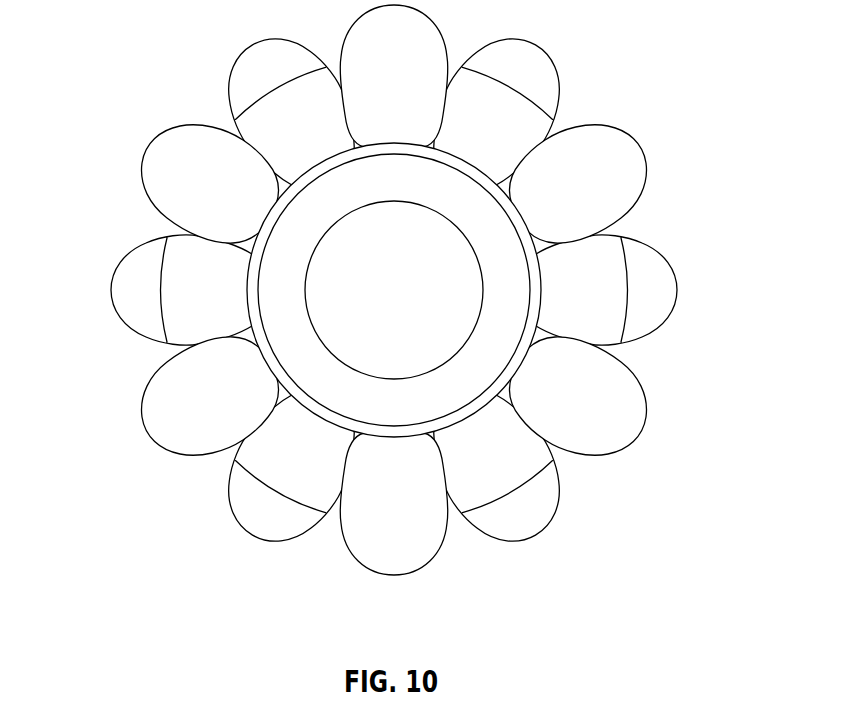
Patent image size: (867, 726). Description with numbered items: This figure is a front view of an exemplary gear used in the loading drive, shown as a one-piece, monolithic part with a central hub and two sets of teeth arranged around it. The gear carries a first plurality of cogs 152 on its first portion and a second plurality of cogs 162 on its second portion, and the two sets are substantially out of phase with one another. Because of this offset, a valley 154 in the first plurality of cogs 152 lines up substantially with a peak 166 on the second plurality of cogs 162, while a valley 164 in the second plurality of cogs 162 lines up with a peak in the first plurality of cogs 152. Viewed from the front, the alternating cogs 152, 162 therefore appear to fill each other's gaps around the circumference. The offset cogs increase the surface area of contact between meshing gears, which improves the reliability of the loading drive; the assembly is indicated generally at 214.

The first plurality of cogs 152 is at (246, 42).
The second plurality of cogs 162 is at (154, 441).
The peak 166 is at (627, 129).
The valley 154 is at (521, 219).
The valley 164 is at (258, 288).
The assembly 214 is at (711, 285).